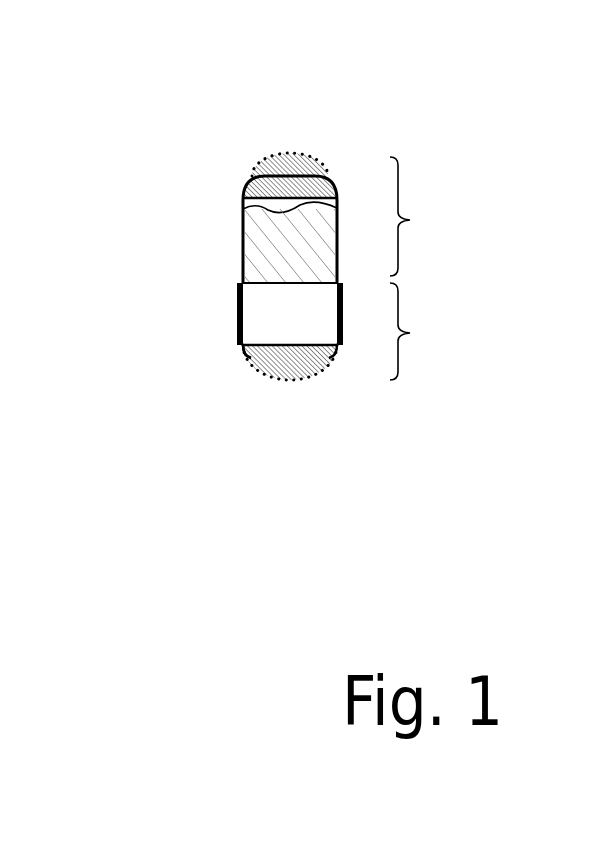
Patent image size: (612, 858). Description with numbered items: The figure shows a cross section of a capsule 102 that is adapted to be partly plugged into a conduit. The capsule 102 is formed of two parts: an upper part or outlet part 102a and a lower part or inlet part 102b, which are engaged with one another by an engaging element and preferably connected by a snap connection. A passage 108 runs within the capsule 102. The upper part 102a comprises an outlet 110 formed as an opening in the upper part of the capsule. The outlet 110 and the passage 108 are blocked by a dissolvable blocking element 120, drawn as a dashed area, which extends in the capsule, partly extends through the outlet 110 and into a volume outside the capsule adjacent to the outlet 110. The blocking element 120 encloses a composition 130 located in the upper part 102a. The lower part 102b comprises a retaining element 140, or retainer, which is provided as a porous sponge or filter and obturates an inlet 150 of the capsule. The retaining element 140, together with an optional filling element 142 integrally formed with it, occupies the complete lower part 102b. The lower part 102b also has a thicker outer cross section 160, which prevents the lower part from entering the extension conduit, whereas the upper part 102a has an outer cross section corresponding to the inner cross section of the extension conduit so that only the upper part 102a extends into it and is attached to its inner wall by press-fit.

The capsule 102 is at (312, 378).
The upper part 102a is at (427, 216).
The lower part 102b is at (427, 331).
The passage 108 is at (277, 220).
The outlet 110 is at (275, 176).
The dissolvable blocking element 120 is at (287, 172).
The composition 130 is at (285, 259).
The retaining element 140 is at (290, 366).
The filling element 142 is at (278, 313).
The inlet 150 is at (240, 353).
The thicker outer cross section 160 is at (340, 317).